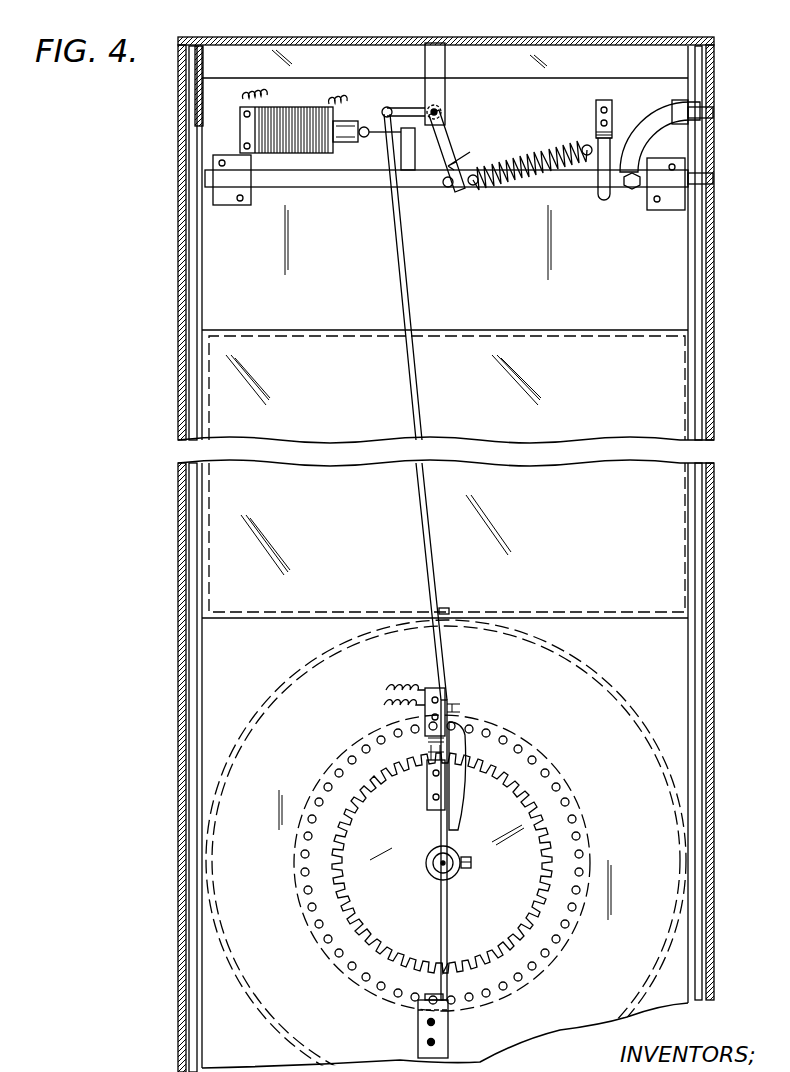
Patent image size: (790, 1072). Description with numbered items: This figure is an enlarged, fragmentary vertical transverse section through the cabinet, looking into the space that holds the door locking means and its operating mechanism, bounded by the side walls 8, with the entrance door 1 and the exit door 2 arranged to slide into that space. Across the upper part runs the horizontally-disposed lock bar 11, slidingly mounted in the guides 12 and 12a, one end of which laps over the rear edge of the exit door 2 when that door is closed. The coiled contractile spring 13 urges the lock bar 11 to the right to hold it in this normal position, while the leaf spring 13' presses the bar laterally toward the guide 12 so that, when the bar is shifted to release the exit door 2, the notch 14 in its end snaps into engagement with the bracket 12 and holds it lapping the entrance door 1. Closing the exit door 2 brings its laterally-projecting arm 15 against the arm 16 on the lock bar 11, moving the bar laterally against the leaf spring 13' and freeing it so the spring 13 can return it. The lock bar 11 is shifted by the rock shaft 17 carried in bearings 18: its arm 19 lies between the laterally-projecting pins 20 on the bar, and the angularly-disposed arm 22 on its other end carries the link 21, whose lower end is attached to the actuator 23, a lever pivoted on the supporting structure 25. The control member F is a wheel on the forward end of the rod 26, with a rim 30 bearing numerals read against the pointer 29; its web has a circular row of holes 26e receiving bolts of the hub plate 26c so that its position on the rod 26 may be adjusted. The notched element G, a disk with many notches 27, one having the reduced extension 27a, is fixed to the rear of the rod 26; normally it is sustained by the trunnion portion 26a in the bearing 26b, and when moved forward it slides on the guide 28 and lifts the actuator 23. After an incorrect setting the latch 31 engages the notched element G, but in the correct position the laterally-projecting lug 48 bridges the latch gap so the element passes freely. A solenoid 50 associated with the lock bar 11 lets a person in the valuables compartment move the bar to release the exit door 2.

The entrance door 1 is at (192, 517).
The exit door 2 is at (703, 542).
The side walls 8 is at (180, 650).
The lock bar 11 is at (322, 188).
The guide 12 is at (662, 210).
The guide 12a is at (236, 205).
The coiled contractile spring 13 is at (532, 154).
The leaf spring 13' is at (585, 145).
The notch 14 is at (714, 179).
The laterally-projecting arm 15 is at (702, 112).
The arm 16 is at (650, 120).
The rock shaft 17 is at (443, 111).
The bearings 18 is at (434, 56).
The arm 19 is at (450, 133).
The laterally-projecting pins 20 is at (473, 186).
The link 21 is at (401, 286).
The angularly-disposed arm 22 is at (406, 109).
The actuator 23 is at (451, 712).
The supporting structure 25 is at (455, 863).
The rod or shaft 26 is at (452, 861).
The trunnion portion 26a is at (466, 869).
The bearing 26b is at (427, 873).
The hub plate 26c is at (580, 934).
The holes 26e is at (546, 772).
The notches 27 is at (345, 847).
The reduced extension 27a is at (456, 960).
The guide 28 is at (451, 993).
The pointer 29 is at (446, 610).
The rim 30 is at (280, 690).
The latch 31 is at (428, 752).
The laterally-projecting lug 48 is at (428, 776).
The solenoid 50 is at (291, 118).
The control member F is at (598, 680).
The notched element G is at (543, 815).